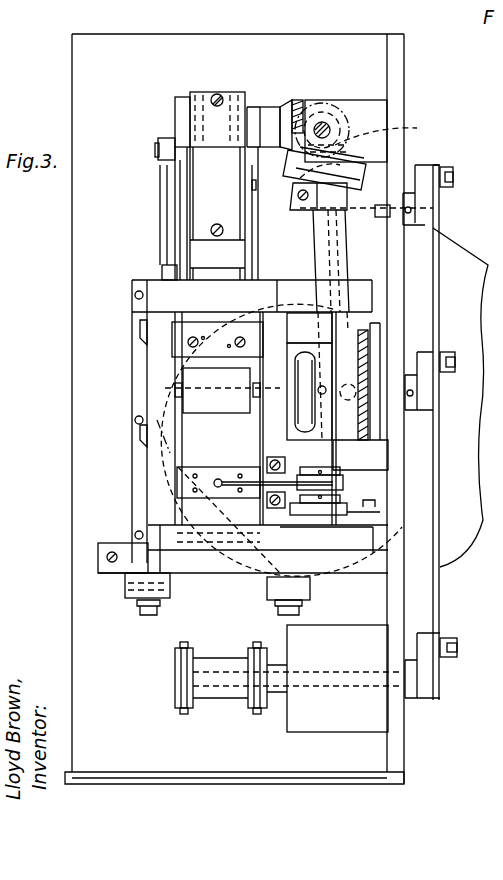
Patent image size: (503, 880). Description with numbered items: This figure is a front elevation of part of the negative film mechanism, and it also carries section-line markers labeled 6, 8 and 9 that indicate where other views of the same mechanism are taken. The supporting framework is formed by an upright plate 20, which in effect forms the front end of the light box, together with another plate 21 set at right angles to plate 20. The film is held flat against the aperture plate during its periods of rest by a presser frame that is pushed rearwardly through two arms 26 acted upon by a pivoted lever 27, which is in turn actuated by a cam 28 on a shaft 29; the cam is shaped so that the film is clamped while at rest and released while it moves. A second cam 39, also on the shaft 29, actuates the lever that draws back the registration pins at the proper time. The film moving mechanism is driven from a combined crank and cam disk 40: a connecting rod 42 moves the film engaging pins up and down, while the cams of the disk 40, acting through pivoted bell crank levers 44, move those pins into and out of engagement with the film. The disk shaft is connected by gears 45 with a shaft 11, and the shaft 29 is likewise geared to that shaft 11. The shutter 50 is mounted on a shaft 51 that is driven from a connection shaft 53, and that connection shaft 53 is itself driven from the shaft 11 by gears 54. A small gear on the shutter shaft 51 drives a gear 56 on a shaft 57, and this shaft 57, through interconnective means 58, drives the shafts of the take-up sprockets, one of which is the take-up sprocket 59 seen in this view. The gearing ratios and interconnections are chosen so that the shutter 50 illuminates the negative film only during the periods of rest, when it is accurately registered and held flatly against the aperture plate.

The section line 6- 6 is at (155, 357).
The section line 8- 8 is at (67, 474).
The section line 9- 9 is at (67, 506).
The shaft 11 is at (333, 137).
The upright plate 20 is at (234, 409).
The plate 21 is at (400, 94).
The arms 26 is at (177, 445).
The pivoted lever 27 is at (255, 498).
The cam 28 is at (333, 483).
The shaft 29 is at (317, 247).
The cam 39 is at (338, 508).
The combined crank and cam disk 40 is at (182, 100).
The connecting rod 42 is at (168, 222).
The pivoted bell crank levers 44 is at (180, 210).
The gears 45 is at (296, 105).
The shutter 50 is at (460, 432).
The shaft 51 is at (323, 389).
The connection shaft 53 is at (335, 277).
The gears 54 is at (371, 149).
The gear 56 is at (378, 435).
The shaft 57 is at (433, 399).
The interconnective means 58 is at (437, 251).
The take-up sprocket 59 is at (230, 688).